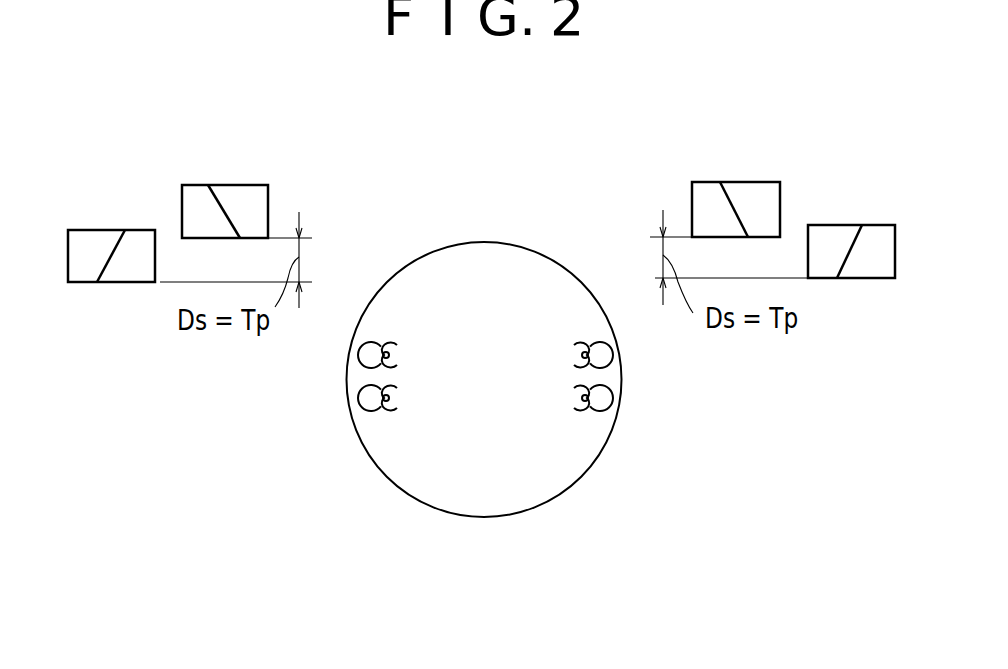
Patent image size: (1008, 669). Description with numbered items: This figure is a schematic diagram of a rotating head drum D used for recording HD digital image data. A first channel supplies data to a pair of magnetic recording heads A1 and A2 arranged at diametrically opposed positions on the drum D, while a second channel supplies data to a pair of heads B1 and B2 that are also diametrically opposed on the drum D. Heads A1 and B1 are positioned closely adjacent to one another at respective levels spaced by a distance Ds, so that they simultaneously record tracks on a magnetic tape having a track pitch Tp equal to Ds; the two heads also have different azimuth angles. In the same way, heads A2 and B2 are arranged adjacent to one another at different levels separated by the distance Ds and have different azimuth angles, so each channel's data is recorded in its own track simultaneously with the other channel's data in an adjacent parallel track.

The rotating drum D is at (537, 252).
The magnetic recording head A1 is at (232, 304).
The magnetic recording head B1 is at (289, 250).
The magnetic recording head A2 is at (734, 273).
The magnetic recording head B2 is at (677, 280).